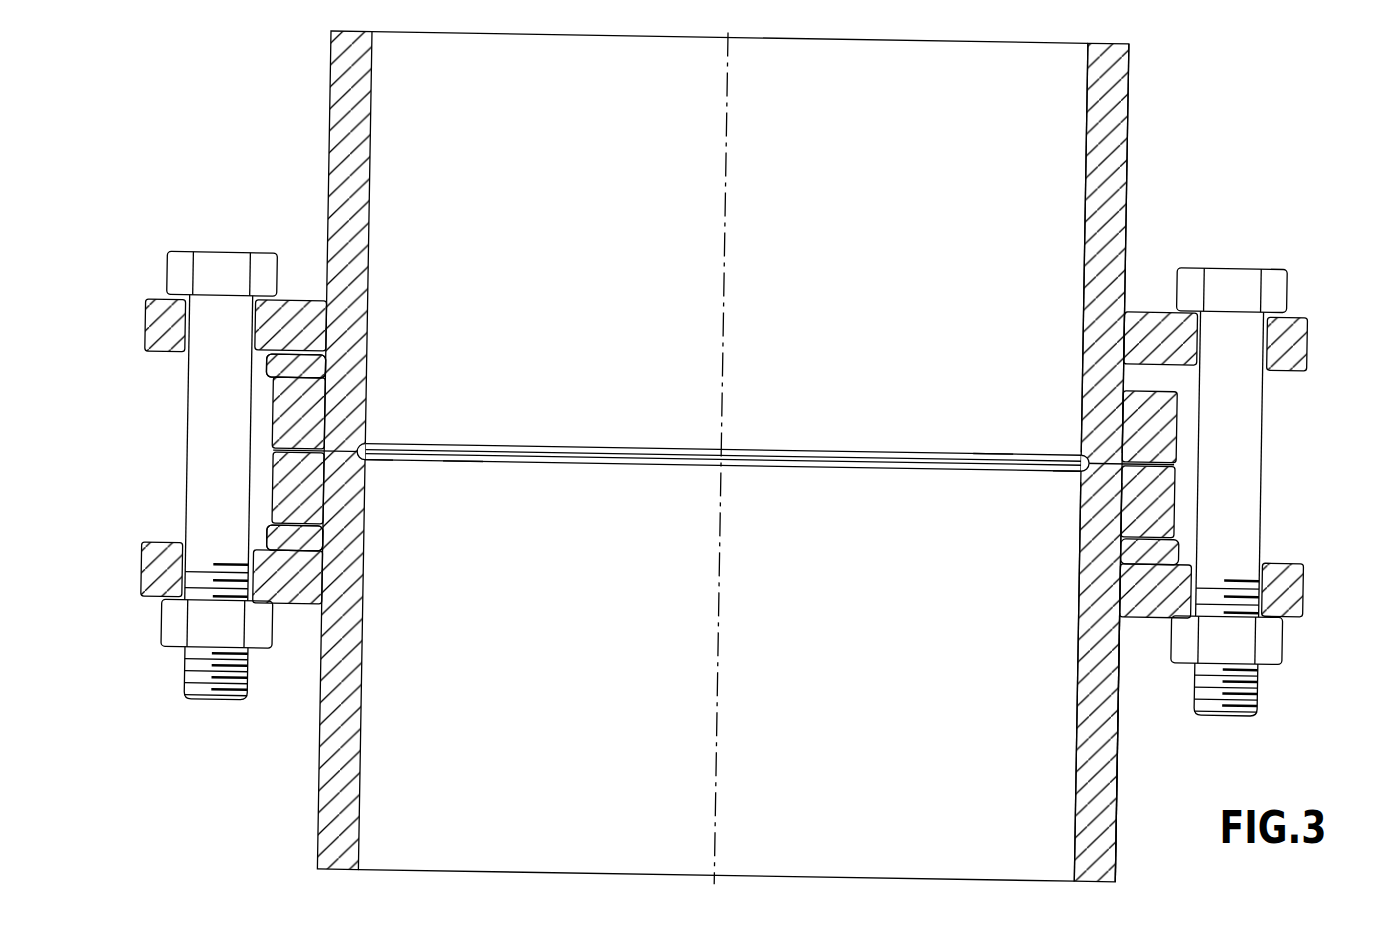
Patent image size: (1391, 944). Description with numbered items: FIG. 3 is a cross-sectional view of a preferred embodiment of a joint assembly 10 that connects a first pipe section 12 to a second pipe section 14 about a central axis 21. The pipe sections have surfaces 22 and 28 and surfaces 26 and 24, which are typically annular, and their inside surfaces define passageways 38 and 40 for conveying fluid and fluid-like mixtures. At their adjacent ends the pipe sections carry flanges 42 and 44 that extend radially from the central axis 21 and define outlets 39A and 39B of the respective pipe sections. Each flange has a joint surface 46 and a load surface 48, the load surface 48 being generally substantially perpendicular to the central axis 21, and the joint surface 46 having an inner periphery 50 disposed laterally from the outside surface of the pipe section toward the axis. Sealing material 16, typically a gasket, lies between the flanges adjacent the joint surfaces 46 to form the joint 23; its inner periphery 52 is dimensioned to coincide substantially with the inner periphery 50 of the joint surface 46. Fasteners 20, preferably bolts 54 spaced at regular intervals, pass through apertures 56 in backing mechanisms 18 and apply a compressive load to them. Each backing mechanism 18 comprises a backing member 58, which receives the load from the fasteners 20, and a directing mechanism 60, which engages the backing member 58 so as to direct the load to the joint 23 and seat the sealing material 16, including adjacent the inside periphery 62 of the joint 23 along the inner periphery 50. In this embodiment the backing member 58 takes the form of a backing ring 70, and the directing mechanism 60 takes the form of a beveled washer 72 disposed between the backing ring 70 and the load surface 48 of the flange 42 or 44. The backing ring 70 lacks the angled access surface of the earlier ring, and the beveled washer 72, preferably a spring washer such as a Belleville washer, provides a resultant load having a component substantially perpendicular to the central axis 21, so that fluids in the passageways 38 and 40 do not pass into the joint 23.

The joint assembly 10 is at (1280, 117).
The first pipe section 12 is at (1127, 130).
The second pipe section 14 is at (1110, 795).
The sealing material 16 is at (590, 446).
The backing mechanism 18 is at (298, 670).
The fastener 20 is at (187, 472).
The central axis 21 is at (728, 101).
The side surface of first pipe section 22 is at (1085, 133).
The joint 23 is at (392, 484).
The outside surface of second pipe section 24 is at (1078, 787).
The outside surface of first pipe section 26 is at (1126, 168).
The side surface of second pipe section 28 is at (1118, 757).
The passageway of first pipe section 38 is at (816, 192).
The outlet of first pipe section 39A is at (998, 446).
The outlet of second pipe section 39B is at (465, 482).
The passageway of second pipe section 40 is at (808, 682).
The flange of first pipe section 42 is at (1170, 418).
The flange of second pipe section 44 is at (1170, 498).
The joint surface 46 is at (366, 478).
The load surface 48 is at (262, 370).
The inner periphery of joint surface 50 is at (366, 428).
The inner periphery of sealing material 52 is at (368, 456).
The bolt 54 is at (178, 420).
The aperture 56 is at (205, 302).
The backing member 58 is at (150, 580).
The directing mechanism 60 is at (328, 543).
The inside periphery of joint 62 is at (1090, 478).
The backing ring 70 is at (297, 300).
The beveled washer 72 is at (332, 374).